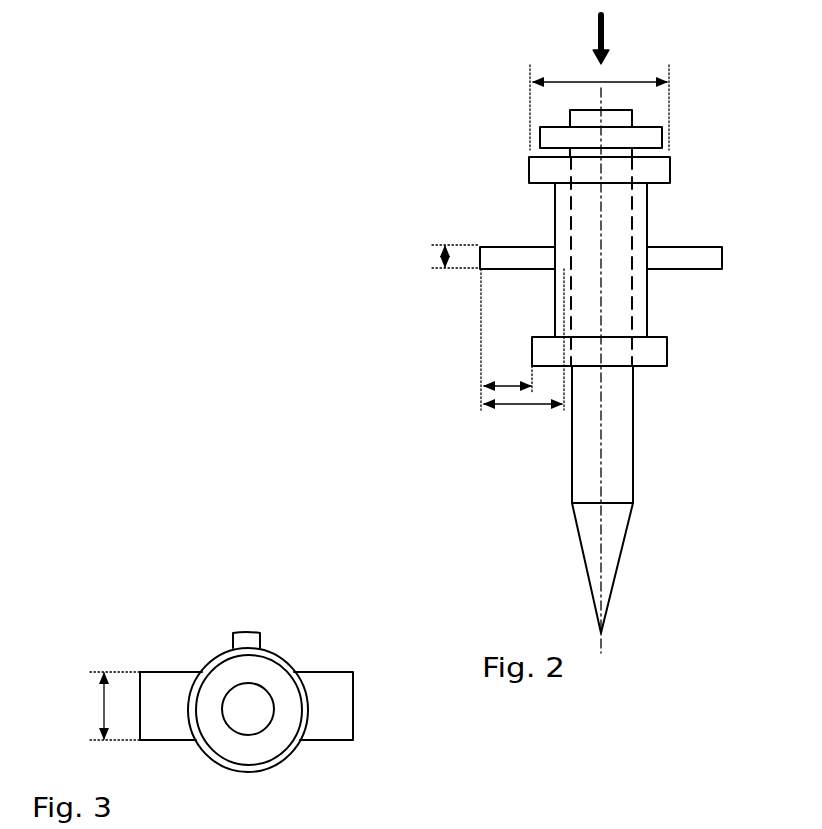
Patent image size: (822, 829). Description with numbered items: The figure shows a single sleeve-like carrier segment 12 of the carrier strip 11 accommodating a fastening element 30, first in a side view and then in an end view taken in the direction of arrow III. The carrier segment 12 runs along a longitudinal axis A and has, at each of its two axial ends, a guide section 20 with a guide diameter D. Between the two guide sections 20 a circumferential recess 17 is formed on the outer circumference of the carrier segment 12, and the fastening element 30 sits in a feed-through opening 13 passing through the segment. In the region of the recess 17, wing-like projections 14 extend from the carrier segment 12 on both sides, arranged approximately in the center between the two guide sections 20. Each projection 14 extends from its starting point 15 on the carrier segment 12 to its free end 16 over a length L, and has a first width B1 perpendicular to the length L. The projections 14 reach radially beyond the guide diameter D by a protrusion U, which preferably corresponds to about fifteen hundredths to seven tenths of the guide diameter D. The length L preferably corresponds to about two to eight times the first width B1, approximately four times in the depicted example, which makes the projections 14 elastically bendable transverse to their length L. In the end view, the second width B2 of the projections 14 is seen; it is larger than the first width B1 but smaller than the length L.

In FIG. 3, the carrier strip 11 is at (240, 638).
In FIG. 2, the carrier segment 12 is at (553, 200).
In FIG. 2, the feed-through opening 13 is at (570, 295).
In FIG. 2, the wing-like projection 14 is at (682, 255).
In FIG. 3, the wing-like projection 14 is at (163, 678).
In FIG. 2, the starting point 15 is at (546, 241).
In FIG. 2, the free end 16 is at (476, 259).
In FIG. 2, the circumferential recess 17 is at (659, 193).
In FIG. 2, the guide section 20 is at (542, 168).
In FIG. 3, the guide section 20 is at (285, 663).
In FIG. 2, the fastening element 30 is at (617, 395).
In FIG. 3, the fastening element 30 is at (270, 730).
In FIG. 2, the longitudinal axis A is at (603, 462).
In FIG. 2, the guide diameter D is at (558, 80).
In FIG. 2, the first width B1 is at (442, 256).
In FIG. 3, the second width B2 is at (102, 704).
In FIG. 2, the protrusion U is at (507, 383).
In FIG. 2, the length L is at (510, 407).
In FIG. 2, the arrow III is at (606, 25).